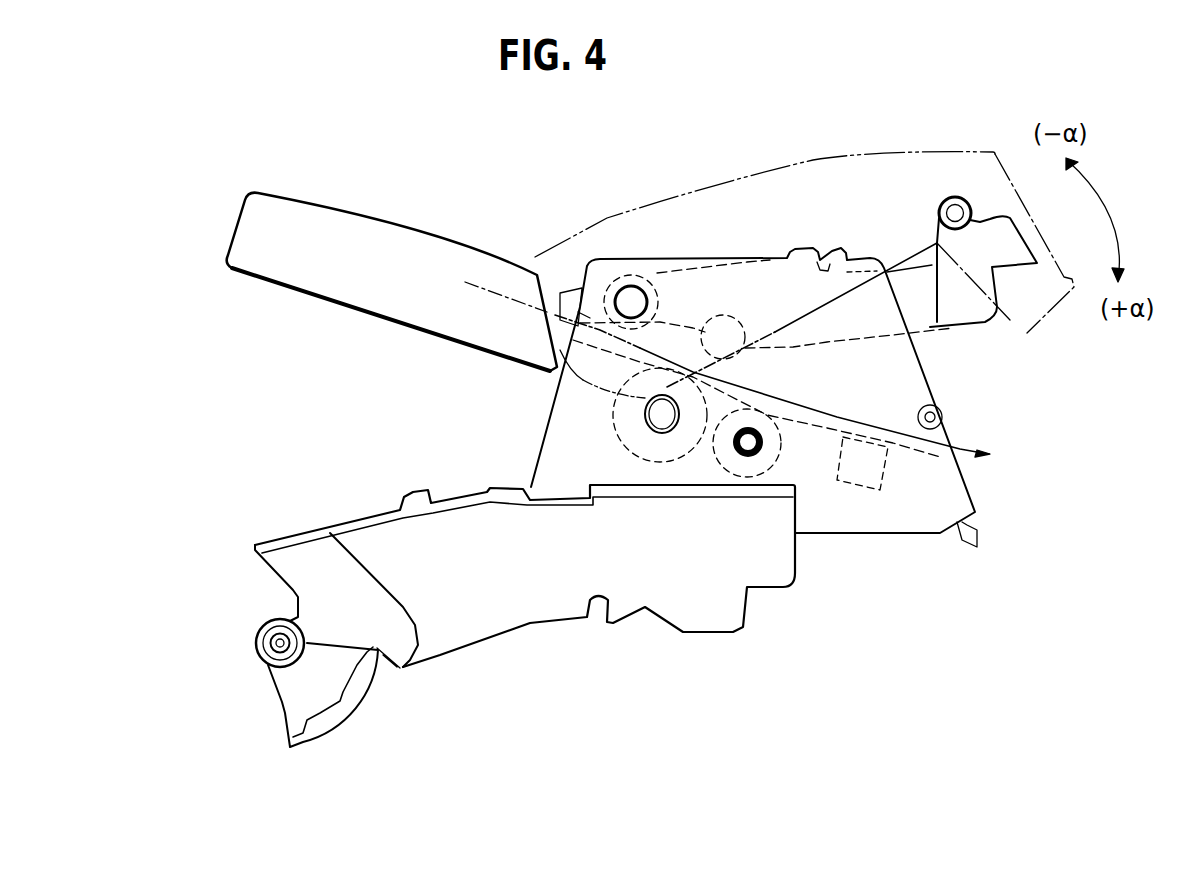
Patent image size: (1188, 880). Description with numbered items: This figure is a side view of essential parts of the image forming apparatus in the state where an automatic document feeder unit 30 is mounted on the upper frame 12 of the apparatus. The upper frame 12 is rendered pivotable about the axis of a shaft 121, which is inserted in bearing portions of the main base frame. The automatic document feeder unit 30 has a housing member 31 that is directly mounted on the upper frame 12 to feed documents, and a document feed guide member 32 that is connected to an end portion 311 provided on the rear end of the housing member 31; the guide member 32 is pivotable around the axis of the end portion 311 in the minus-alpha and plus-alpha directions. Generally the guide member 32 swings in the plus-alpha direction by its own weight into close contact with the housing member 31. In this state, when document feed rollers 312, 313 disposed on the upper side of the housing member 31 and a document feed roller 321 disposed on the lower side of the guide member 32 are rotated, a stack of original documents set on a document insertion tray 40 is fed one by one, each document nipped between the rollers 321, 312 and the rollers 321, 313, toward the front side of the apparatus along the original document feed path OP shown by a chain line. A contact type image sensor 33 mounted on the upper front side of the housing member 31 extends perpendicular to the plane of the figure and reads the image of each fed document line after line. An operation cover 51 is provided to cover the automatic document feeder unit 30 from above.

The upper frame 12 is at (513, 608).
The shaft 121 is at (270, 642).
The automatic document feeder unit 30 is at (867, 211).
The housing member 31 is at (913, 388).
The end portion 311 is at (630, 295).
The document feed roller 312 is at (645, 462).
The document feed roller 313 is at (720, 473).
The document feed guide member 32 is at (968, 303).
The document feed roller 321 is at (733, 315).
The contact type image sensor 33 is at (857, 487).
The document insertion tray 40 is at (354, 224).
The operation cover 51 is at (677, 200).